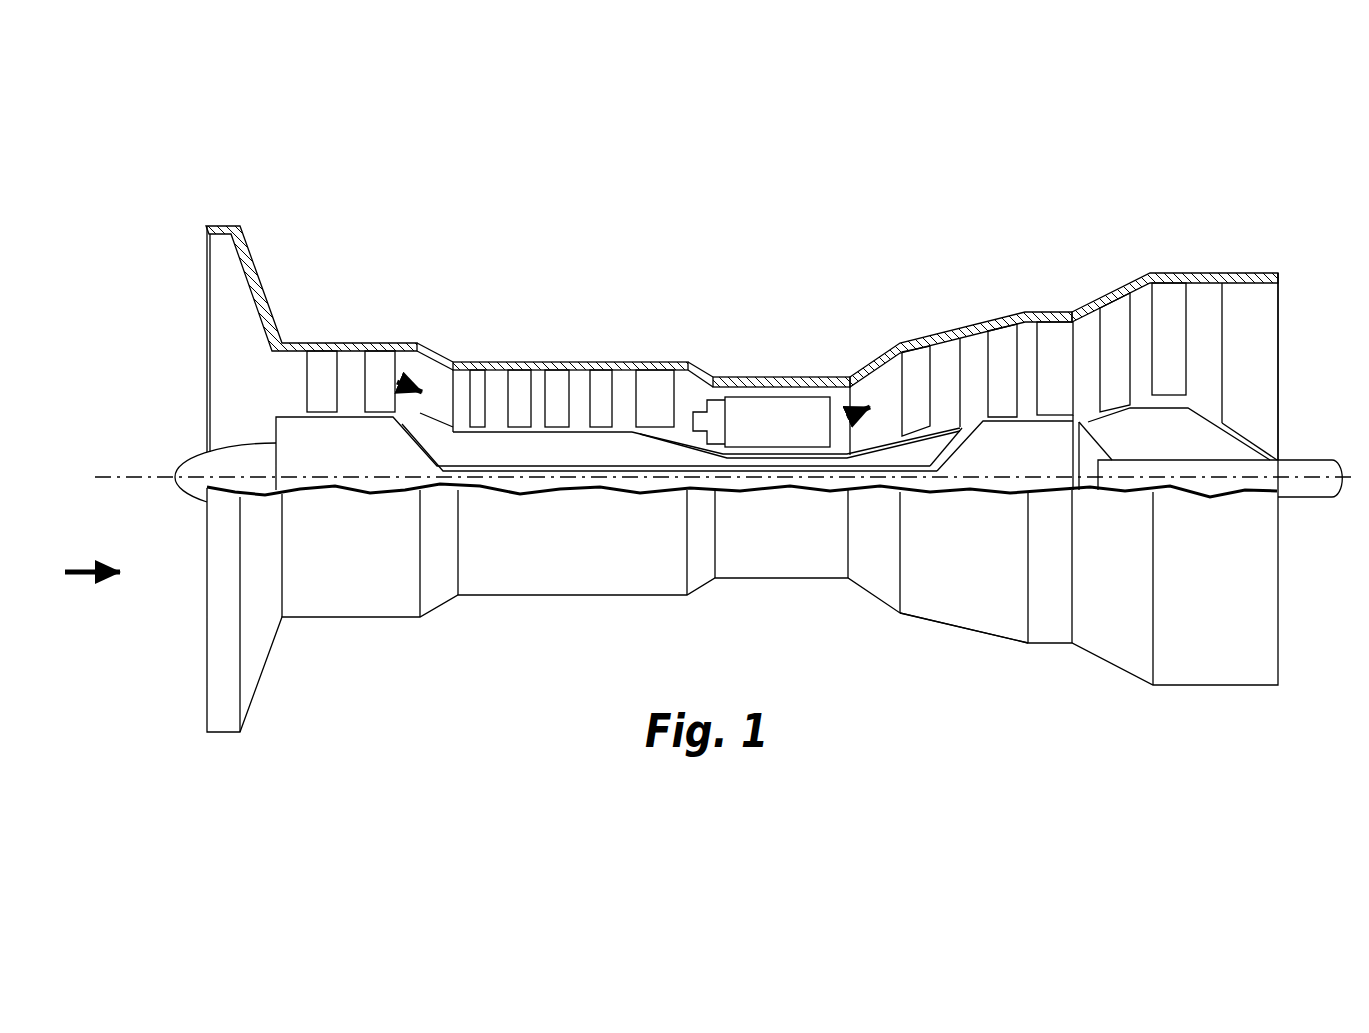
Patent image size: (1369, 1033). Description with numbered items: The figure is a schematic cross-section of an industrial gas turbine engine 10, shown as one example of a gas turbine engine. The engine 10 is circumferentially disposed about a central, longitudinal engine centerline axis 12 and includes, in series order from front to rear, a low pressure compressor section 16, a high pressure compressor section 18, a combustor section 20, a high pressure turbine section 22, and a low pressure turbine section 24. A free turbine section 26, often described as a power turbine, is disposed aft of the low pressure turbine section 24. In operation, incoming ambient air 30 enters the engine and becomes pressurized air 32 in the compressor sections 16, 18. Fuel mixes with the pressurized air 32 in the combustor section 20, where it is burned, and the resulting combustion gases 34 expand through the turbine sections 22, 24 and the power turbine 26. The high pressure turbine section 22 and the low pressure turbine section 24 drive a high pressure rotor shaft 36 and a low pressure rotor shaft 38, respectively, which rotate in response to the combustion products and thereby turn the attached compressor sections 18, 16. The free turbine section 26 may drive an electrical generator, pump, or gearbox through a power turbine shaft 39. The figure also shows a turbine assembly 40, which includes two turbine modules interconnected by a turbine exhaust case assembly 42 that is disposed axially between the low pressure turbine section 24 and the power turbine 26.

The industrial gas turbine engine 10 is at (726, 437).
The engine centerline axis 12 is at (138, 474).
The low pressure compressor section 16 is at (343, 322).
The high pressure compressor section 18 is at (592, 333).
The combustor section 20 is at (755, 421).
The high pressure turbine section 22 is at (944, 304).
The low pressure turbine section 24 is at (1061, 292).
The free turbine section 26 is at (1218, 264).
The incoming ambient air 30 is at (100, 566).
The pressurized air 32 is at (426, 392).
The combustion gases 34 is at (860, 403).
The high pressure rotor shaft 36 is at (670, 443).
The low pressure rotor shaft 38 is at (435, 452).
The power turbine shaft 39 is at (1308, 492).
The turbine assembly 40 is at (1064, 322).
The turbine exhaust case assembly 42 is at (1028, 646).